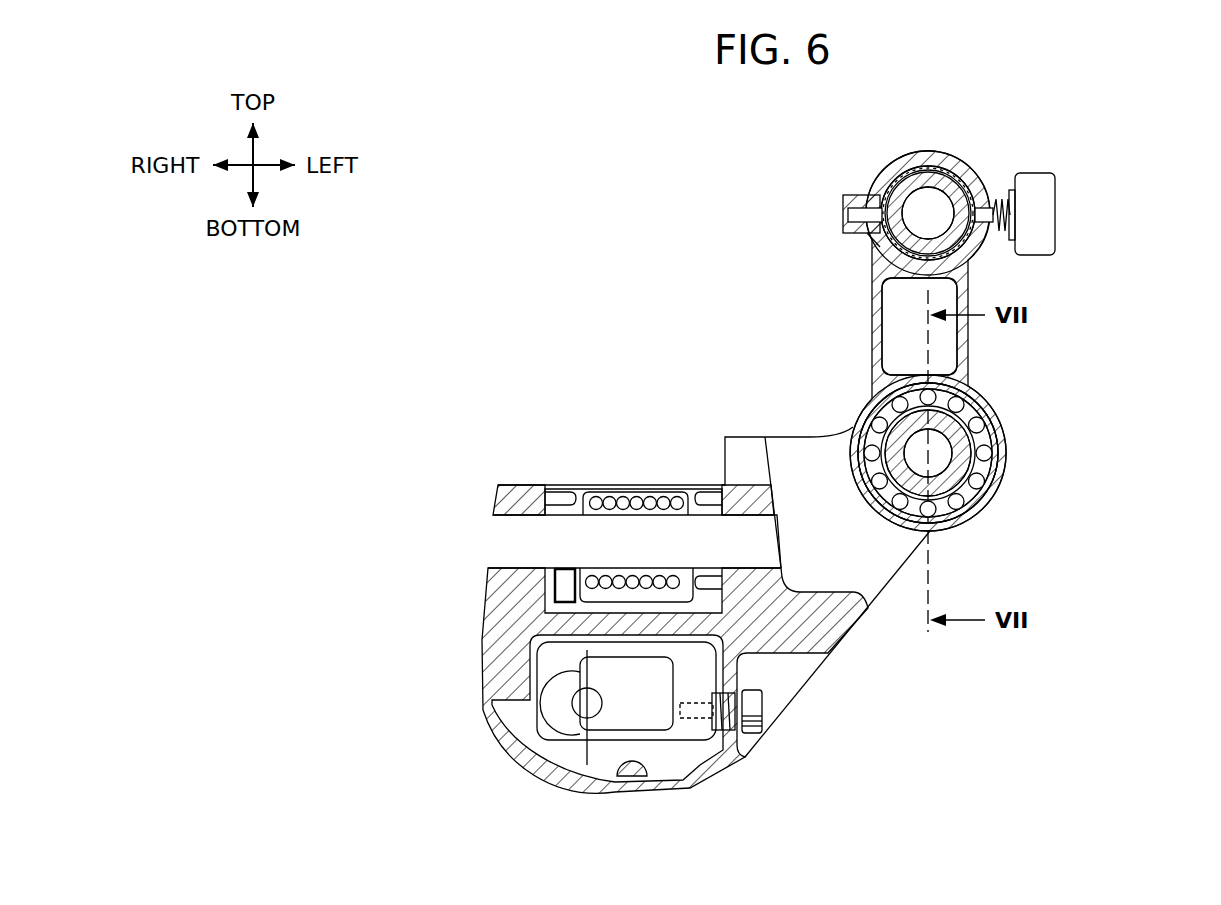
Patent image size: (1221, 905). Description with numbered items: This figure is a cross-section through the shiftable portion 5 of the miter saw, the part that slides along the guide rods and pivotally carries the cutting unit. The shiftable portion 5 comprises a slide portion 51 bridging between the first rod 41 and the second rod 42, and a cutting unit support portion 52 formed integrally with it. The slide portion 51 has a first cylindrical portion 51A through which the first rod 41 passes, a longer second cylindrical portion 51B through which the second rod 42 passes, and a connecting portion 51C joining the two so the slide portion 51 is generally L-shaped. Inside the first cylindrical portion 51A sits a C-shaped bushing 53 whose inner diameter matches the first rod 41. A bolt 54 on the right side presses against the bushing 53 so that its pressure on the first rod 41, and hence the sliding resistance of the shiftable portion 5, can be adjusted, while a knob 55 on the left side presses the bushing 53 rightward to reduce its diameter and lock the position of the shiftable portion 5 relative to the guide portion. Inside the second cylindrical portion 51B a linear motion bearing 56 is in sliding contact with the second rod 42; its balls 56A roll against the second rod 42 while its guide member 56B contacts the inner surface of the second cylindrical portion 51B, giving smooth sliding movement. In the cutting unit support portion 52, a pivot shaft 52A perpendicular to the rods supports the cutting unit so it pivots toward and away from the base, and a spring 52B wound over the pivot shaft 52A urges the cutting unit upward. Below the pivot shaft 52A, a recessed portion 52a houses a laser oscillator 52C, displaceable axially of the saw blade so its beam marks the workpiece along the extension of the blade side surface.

The shiftable portion 5 is at (716, 414).
The first rod 41 is at (898, 257).
The second rod 42 is at (868, 422).
The slide portion 51 is at (978, 348).
The first cylindrical portion 51A is at (932, 160).
The second cylindrical portion 51B is at (982, 503).
The connecting portion 51C is at (877, 322).
The cutting unit support portion 52 is at (512, 604).
The pivot shaft 52A is at (532, 545).
The spring 52B is at (613, 500).
The laser oscillator 52C is at (652, 712).
The recessed portion 52a is at (577, 762).
The bushing 53 is at (896, 181).
The bolt 54 is at (845, 215).
The knob 55 is at (1043, 213).
The linear motion bearing 56 is at (1124, 428).
The balls 56A is at (1000, 425).
The guide member 56B is at (1003, 460).